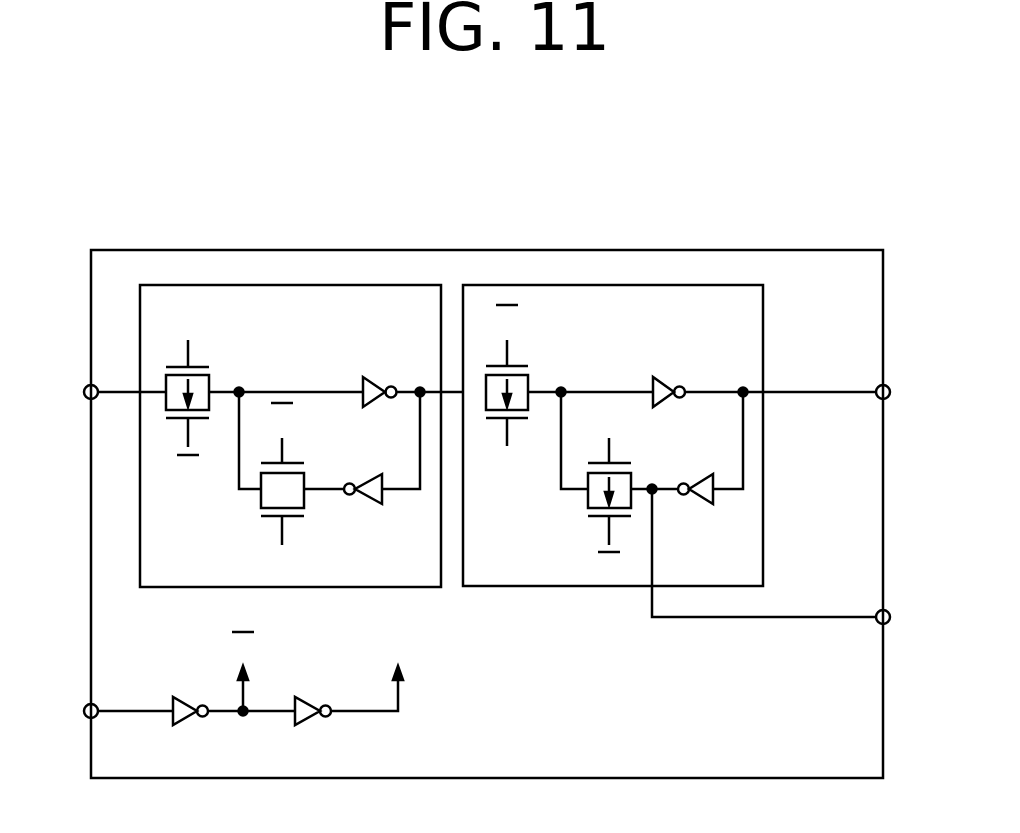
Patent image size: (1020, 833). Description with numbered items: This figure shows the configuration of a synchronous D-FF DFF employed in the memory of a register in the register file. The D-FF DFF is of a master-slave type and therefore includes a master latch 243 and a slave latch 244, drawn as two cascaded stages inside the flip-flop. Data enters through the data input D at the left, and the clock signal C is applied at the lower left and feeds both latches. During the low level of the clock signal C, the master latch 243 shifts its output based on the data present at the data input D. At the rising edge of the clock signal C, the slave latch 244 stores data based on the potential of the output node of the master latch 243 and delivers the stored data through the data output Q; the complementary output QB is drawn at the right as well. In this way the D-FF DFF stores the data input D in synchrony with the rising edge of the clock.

The master latch 243 is at (422, 588).
The slave latch 244 is at (593, 588).
The synchronous D-FF DFF is at (793, 250).
The data input D is at (105, 393).
The data output Q is at (841, 393).
The inverted output terminal Q-bar QB is at (918, 601).
The clock signal CLK C is at (217, 695).